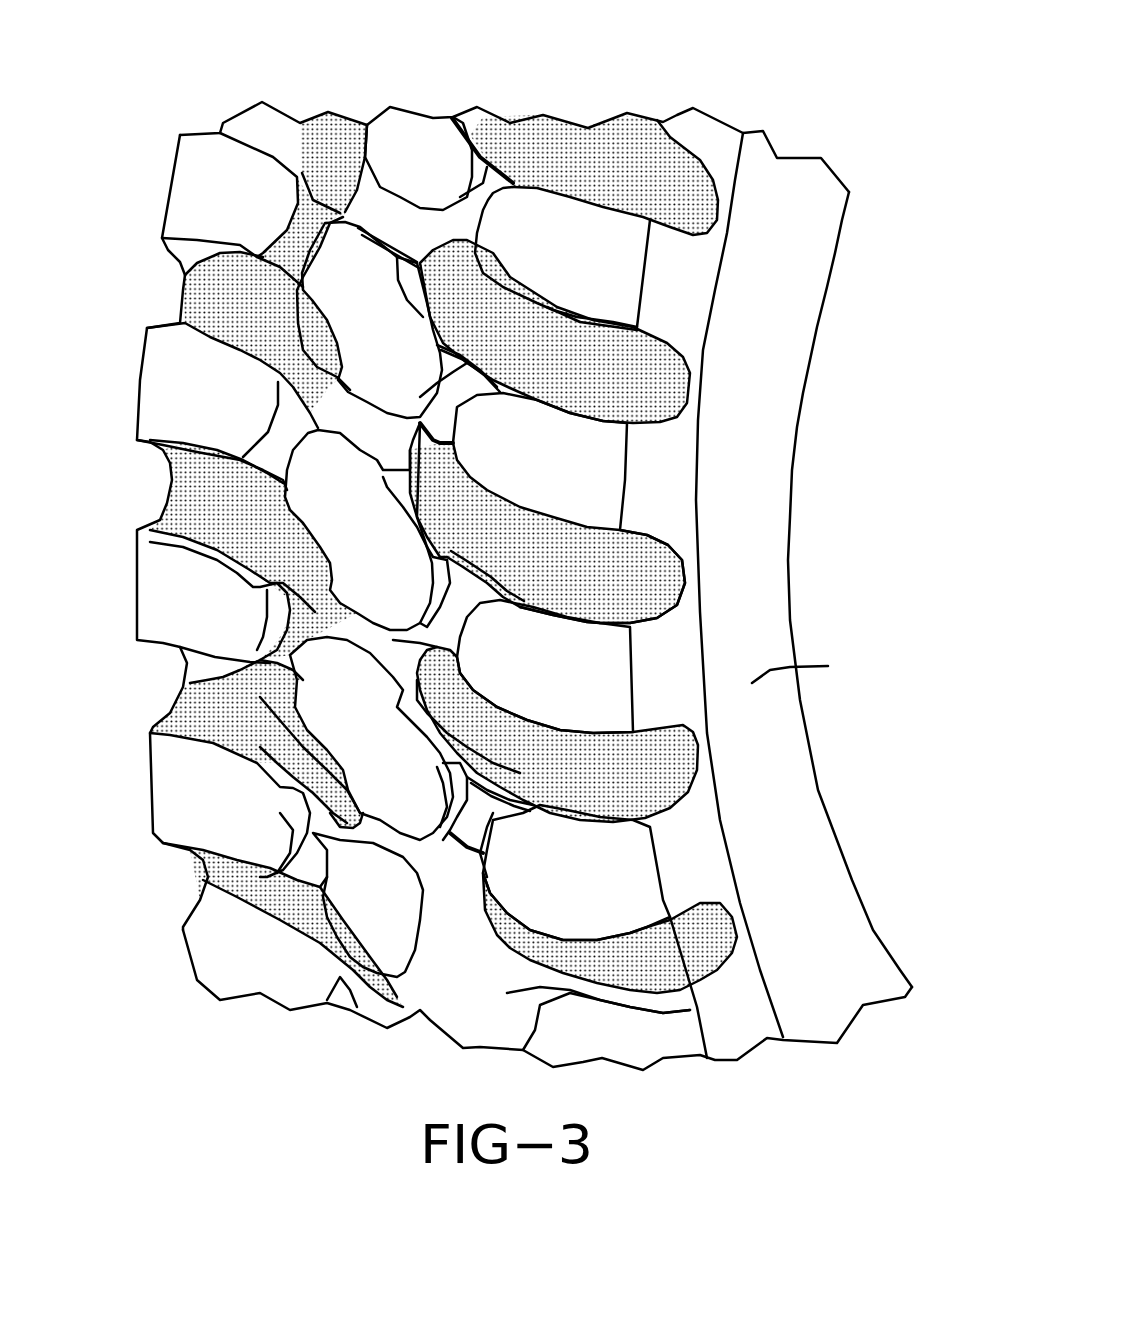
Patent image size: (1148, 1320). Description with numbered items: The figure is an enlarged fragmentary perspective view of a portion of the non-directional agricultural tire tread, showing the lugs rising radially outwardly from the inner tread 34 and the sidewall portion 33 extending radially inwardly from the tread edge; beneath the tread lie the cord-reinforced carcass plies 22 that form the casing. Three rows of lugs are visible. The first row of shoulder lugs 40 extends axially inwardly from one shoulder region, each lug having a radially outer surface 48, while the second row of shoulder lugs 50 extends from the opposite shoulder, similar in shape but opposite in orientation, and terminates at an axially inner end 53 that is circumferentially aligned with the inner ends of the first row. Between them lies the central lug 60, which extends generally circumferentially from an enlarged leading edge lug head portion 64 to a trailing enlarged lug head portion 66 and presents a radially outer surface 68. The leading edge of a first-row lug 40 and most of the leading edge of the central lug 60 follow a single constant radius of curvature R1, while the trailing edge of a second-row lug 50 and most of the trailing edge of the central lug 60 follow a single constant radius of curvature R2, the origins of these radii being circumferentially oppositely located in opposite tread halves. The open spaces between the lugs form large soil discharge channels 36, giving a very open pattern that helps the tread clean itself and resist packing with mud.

The carcass plies 22 is at (524, 586).
The sidewall portion 33 is at (807, 666).
The inner tread 34 is at (647, 536).
The soil discharge channels 36 is at (664, 576).
The first row of shoulder lugs 40 is at (223, 149).
The outer surface of first row shoulder lug 48 is at (196, 210).
The second row of shoulder lugs 50 is at (602, 175).
The axially inner end of second row lug 53 is at (615, 142).
The central lug 60 is at (426, 115).
The leading edge lug head portion 64 is at (351, 164).
The trailing enlarged lug head portion 66 is at (544, 188).
The radially outer surface of central lug 68 is at (366, 133).
The first radius of curvature R1 is at (207, 514).
The second radius of curvature R2 is at (592, 423).